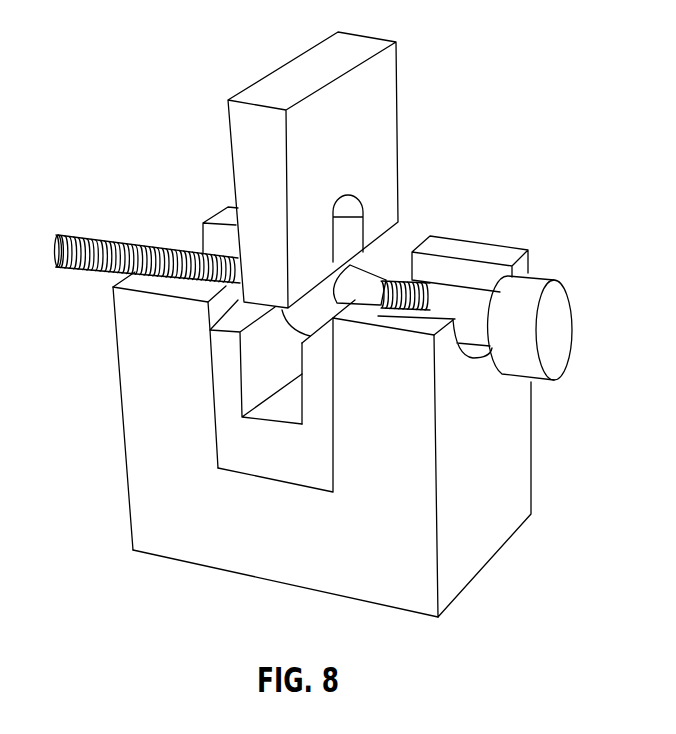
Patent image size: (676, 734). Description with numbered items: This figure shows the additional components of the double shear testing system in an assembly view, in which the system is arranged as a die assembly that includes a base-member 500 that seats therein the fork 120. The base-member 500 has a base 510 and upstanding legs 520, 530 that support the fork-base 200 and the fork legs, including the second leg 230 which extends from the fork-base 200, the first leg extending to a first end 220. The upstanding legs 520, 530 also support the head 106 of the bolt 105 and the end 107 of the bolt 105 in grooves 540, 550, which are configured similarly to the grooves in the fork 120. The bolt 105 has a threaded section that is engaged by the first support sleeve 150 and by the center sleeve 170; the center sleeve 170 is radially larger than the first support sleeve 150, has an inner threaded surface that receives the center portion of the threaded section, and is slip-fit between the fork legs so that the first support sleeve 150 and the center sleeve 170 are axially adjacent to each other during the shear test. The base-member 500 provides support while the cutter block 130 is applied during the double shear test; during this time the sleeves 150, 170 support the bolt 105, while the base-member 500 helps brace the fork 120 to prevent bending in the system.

The bolt 105 is at (100, 237).
The head 106 is at (558, 335).
The end 107 is at (67, 233).
The fork 120 is at (213, 356).
The cutter block 130 is at (290, 83).
The first support sleeve 150 is at (372, 283).
The center sleeve 170 is at (373, 251).
The fork-base 200 is at (282, 470).
The first end 220 is at (315, 397).
The second leg 230 is at (232, 400).
The base-member 500 is at (403, 584).
The base 510 is at (278, 555).
The upstanding leg 520 is at (495, 519).
The upstanding leg 530 is at (193, 510).
The groove 540 is at (468, 360).
The groove 550 is at (221, 233).